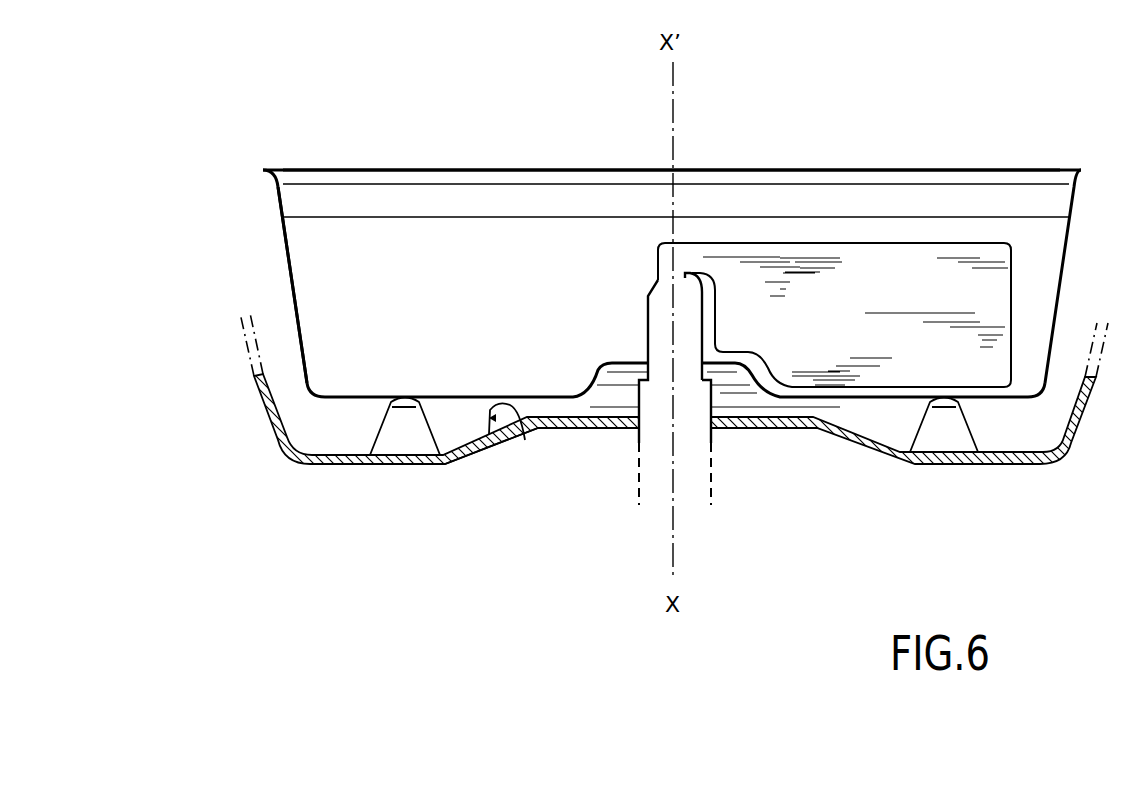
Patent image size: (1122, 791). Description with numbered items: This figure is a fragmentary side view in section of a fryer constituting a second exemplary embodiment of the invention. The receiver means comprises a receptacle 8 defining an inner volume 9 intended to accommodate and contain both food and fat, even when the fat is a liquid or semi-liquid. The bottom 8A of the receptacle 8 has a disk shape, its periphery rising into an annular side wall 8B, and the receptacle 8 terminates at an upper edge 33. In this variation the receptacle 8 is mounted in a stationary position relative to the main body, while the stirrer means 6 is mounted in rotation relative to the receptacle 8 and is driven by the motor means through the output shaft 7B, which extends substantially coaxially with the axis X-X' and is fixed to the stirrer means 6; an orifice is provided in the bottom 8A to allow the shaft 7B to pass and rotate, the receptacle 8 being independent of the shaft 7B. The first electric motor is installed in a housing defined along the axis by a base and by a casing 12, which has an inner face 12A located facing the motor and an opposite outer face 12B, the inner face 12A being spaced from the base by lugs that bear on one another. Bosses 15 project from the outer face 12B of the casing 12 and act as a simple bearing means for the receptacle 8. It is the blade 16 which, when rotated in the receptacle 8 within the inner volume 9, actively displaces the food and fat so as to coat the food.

The stirrer means 6 is at (798, 276).
The output shaft 7B is at (658, 305).
The receptacle 8 is at (853, 398).
The bottom 8A is at (900, 400).
The annular side wall 8B is at (286, 272).
The inner volume 9 is at (506, 305).
The casing 12 is at (338, 455).
The inner face 12A is at (476, 453).
The outer face 12B is at (525, 440).
The bosses 15 is at (402, 430).
The blade 16 is at (915, 272).
The upper edge 33 is at (403, 170).